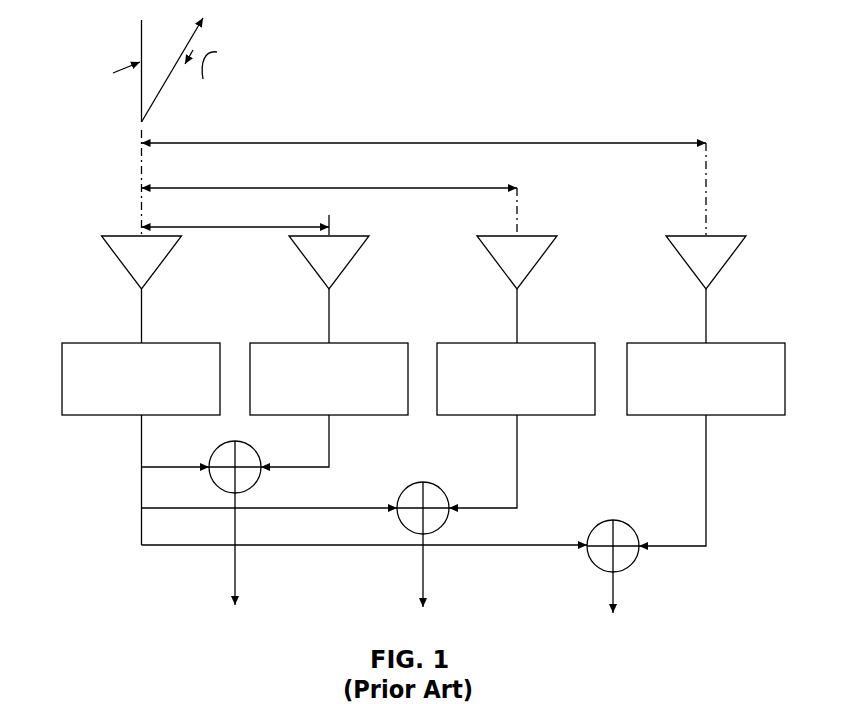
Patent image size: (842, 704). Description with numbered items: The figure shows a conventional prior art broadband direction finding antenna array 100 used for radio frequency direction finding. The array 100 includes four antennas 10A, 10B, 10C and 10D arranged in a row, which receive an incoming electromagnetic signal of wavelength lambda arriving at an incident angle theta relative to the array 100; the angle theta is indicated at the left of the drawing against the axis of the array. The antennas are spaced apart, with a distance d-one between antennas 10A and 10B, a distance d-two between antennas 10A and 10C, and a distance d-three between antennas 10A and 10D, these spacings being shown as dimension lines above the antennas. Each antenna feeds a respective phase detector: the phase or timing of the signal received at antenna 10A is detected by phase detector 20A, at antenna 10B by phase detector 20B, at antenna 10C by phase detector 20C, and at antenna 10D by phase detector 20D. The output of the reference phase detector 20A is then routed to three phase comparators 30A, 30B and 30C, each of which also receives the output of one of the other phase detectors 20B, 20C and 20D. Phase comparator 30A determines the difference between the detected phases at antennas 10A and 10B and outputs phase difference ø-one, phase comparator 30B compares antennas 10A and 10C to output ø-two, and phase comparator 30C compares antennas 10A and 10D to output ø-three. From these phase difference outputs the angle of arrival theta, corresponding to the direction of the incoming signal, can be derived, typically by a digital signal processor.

The antenna array 100 is at (652, 60).
The antenna 10A is at (121, 262).
The antenna 10B is at (309, 262).
The antenna 10C is at (497, 262).
The antenna 10D is at (686, 262).
The phase detector 20A is at (128, 343).
The phase detector 20B is at (316, 343).
The phase detector 20C is at (503, 343).
The phase detector 20D is at (693, 343).
The phase comparator 30A is at (252, 487).
The phase comparator 30B is at (420, 484).
The phase comparator 30C is at (606, 522).